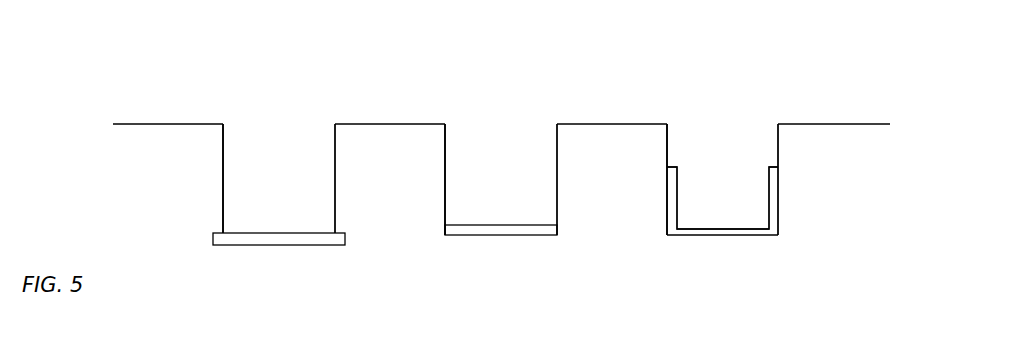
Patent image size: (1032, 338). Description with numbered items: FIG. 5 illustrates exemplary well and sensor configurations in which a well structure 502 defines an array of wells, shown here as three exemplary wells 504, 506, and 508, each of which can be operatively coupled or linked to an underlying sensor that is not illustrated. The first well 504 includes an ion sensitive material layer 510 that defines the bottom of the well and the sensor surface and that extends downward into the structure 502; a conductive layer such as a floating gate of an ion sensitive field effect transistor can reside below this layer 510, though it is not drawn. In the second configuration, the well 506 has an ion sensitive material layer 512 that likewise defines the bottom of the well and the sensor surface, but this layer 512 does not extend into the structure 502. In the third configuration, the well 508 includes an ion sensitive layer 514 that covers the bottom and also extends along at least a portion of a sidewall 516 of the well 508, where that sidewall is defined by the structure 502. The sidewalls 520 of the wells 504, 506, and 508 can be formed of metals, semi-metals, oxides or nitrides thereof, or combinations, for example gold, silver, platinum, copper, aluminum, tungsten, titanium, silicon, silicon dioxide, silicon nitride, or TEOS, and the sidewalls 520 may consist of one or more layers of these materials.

The well structure 502 is at (120, 152).
The well 504 is at (276, 120).
The well 506 is at (499, 121).
The well 508 is at (713, 121).
The ion sensitive material layer 510 is at (278, 245).
The ion sensitive material layer 512 is at (485, 236).
The ion sensitive layer 514 is at (712, 236).
The sidewall 516 is at (667, 208).
The sidewalls 520 is at (223, 180).